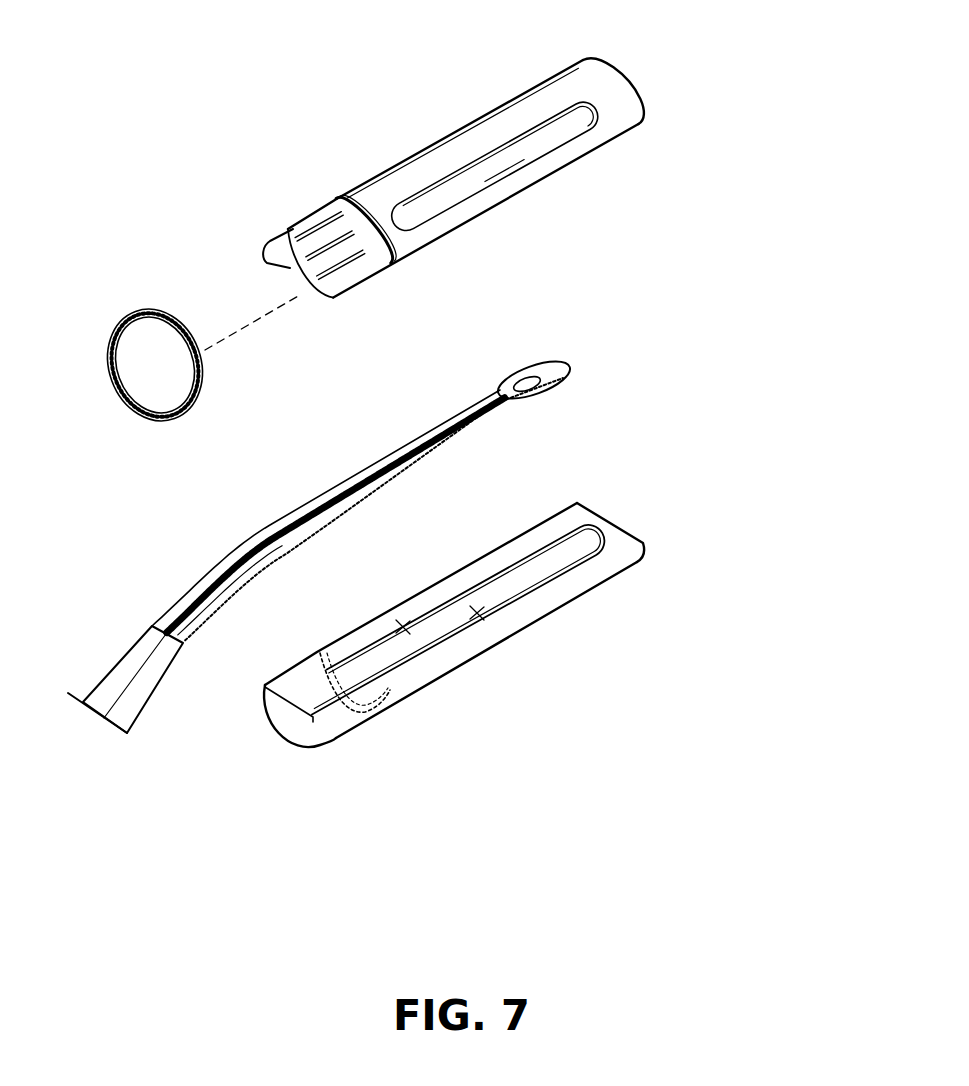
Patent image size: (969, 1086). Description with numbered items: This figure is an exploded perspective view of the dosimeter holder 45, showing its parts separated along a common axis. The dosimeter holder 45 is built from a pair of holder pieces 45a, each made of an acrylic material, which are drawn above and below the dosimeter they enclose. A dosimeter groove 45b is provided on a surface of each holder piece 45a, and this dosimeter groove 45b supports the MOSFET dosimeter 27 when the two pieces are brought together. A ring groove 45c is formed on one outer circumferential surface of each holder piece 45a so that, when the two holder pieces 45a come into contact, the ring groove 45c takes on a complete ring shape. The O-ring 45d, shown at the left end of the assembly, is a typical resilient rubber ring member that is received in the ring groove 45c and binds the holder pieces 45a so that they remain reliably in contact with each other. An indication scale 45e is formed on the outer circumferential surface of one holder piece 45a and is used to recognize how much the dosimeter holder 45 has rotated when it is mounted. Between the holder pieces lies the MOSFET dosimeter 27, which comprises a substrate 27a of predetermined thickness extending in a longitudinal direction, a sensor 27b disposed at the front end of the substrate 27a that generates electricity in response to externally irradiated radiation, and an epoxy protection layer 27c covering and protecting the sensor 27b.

The dosimeter holder 45 is at (722, 330).
The holder piece 45a is at (603, 80).
The dosimeter groove 45b is at (298, 278).
The ring groove 45c is at (365, 198).
The O-ring 45d is at (140, 310).
The indication scale 45e is at (320, 230).
The MOSFET dosimeter 27 is at (372, 452).
The substrate 27a is at (216, 590).
The sensor 27b is at (535, 372).
The epoxy protection layer 27c is at (512, 375).